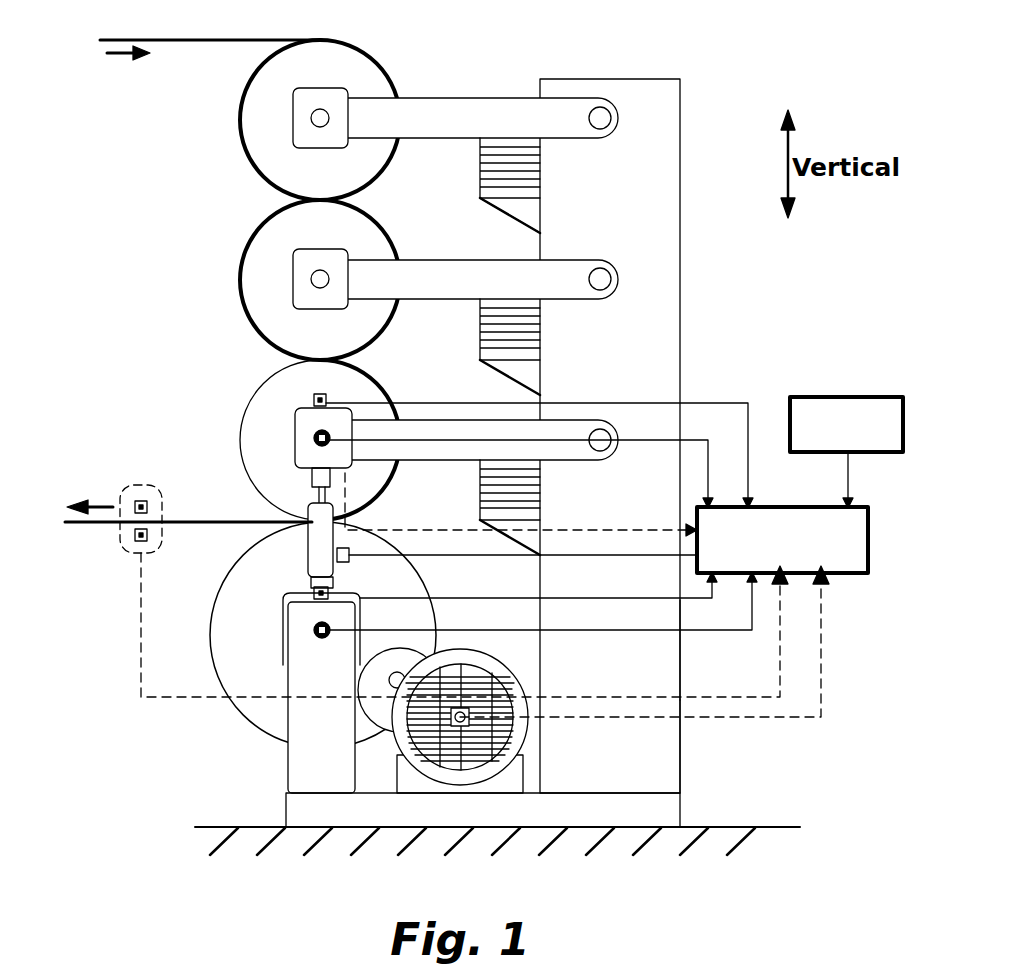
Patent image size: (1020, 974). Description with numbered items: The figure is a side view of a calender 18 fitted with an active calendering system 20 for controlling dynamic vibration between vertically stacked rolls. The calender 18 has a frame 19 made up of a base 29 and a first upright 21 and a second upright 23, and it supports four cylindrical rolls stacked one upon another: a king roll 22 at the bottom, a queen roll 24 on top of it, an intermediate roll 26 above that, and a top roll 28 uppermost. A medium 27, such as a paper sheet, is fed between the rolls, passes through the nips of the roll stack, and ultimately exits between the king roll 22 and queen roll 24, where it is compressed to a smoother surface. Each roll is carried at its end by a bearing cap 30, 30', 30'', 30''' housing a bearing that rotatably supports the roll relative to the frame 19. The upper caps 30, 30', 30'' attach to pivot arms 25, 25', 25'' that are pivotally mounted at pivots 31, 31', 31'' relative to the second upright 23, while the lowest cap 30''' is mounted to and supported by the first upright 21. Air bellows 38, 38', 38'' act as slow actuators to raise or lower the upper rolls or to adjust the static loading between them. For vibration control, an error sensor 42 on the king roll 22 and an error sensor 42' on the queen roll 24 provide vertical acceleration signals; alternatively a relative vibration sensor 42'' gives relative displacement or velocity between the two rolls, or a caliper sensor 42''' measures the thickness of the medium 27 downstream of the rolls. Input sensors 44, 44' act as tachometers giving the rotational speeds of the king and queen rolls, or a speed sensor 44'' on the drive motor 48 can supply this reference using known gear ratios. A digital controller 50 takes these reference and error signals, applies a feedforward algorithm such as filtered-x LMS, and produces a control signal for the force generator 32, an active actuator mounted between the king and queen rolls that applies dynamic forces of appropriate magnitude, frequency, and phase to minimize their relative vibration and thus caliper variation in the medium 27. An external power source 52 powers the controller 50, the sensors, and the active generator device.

The calender 18 is at (625, 68).
The frame 19 is at (700, 740).
The active calendering system 20 is at (785, 385).
The first upright 21 is at (290, 756).
The king roll 22 is at (323, 635).
The second upright 23 is at (668, 766).
The queen roll 24 is at (320, 440).
The pivot arm 25 is at (459, 88).
The pivot arm 25' is at (459, 250).
The pivot arm 25'' is at (459, 403).
The intermediate roll 26 is at (320, 280).
The medium 27 is at (195, 522).
The top roll 28 is at (320, 120).
The base 29 is at (671, 822).
The bearing cap 30 is at (268, 139).
The bearing cap 30' is at (266, 294).
The bearing cap 30'' is at (262, 432).
The bearing cap 30''' is at (210, 629).
The pivot 31 is at (660, 126).
The pivot 31' is at (663, 287).
The pivot 31'' is at (668, 408).
The force generator 32 is at (308, 510).
The air bellows 38 is at (513, 127).
The air bellows 38' is at (549, 308).
The air bellows 38'' is at (571, 451).
The error sensor 42 is at (450, 657).
The error sensor 42' is at (473, 436).
The relative vibration sensor 42'' is at (517, 533).
The caliper sensor 42''' is at (438, 557).
The input sensor 44 is at (463, 676).
The input sensor 44' is at (513, 473).
The speed sensor 44'' is at (644, 641).
The drive motor 48 is at (528, 734).
The controller 50 is at (856, 573).
The external power source 52 is at (846, 397).